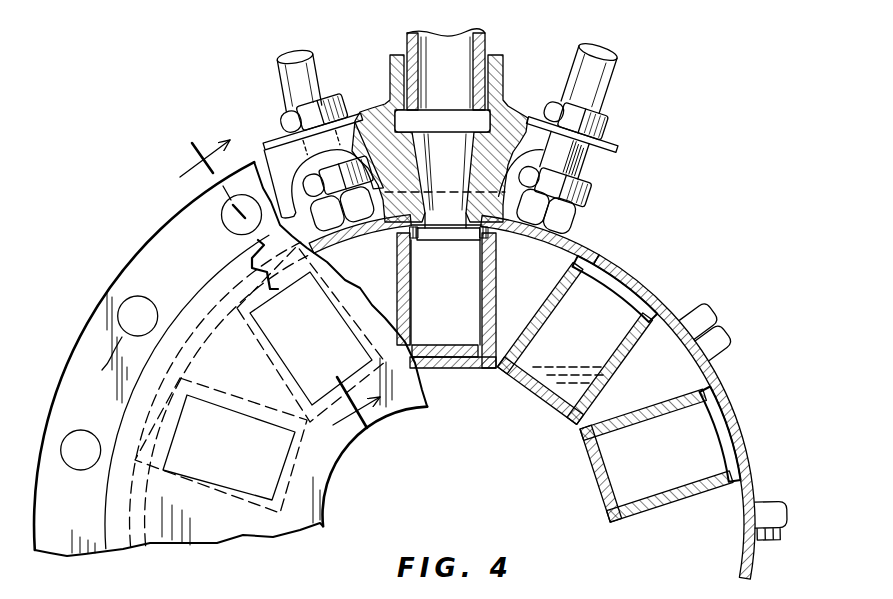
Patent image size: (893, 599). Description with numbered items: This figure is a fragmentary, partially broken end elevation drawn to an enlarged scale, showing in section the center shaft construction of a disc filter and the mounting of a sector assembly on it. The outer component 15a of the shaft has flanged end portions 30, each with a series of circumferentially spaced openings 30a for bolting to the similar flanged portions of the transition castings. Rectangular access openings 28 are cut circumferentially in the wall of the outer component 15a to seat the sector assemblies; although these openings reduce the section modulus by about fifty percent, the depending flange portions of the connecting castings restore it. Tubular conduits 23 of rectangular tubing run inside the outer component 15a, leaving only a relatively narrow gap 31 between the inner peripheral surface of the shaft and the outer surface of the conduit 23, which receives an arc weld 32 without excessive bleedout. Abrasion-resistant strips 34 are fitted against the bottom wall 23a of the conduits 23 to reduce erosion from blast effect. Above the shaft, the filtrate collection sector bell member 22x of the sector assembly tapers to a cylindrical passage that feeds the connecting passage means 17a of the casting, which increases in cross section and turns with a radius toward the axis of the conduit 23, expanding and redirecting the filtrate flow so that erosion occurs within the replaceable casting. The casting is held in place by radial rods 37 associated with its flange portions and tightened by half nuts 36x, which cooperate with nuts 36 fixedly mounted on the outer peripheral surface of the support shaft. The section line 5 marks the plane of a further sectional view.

The section line 5- 5 is at (280, 293).
The outer component 15a is at (586, 241).
The connecting passage means 17a is at (462, 168).
The filtrate collection sector bell member 22x is at (488, 45).
The conduit member 23 is at (250, 345).
The bottom wall 23a is at (451, 369).
The access openings 28 is at (222, 258).
The flanged end portions 30 is at (140, 253).
The circumferentially spaced openings 30a is at (86, 430).
The gap 31 is at (648, 298).
The arc weld 32 is at (471, 220).
The abrasion-resistant strips 34 is at (433, 345).
The nuts 36 is at (733, 328).
The half nuts 36x is at (352, 97).
The rods 37 is at (281, 81).